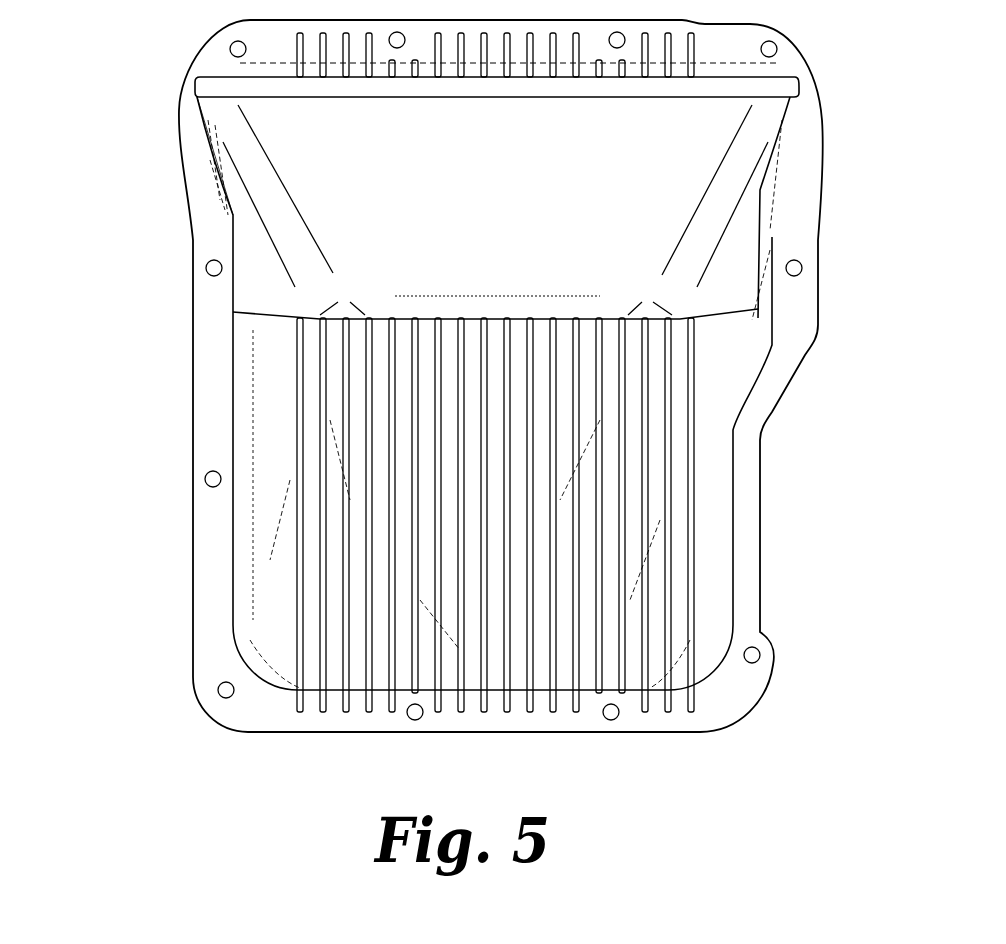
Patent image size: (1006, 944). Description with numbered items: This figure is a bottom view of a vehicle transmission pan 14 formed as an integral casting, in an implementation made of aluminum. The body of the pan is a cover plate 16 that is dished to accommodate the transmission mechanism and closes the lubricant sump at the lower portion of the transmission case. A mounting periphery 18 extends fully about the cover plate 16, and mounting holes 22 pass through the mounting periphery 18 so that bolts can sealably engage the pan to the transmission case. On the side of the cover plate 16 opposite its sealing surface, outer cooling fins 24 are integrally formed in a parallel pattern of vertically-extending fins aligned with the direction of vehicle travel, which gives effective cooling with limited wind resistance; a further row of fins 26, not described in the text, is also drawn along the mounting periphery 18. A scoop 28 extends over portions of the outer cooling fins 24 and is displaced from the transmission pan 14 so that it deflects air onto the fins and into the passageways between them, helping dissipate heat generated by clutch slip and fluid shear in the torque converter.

The vehicle transmission pan 14 is at (868, 420).
The cover plate 16 is at (776, 178).
The mounting periphery 18 is at (790, 305).
The mounting holes 22 is at (213, 481).
The outer cooling fins 24 is at (295, 628).
The upper fins 26 is at (495, 55).
The scoop 28 is at (232, 122).